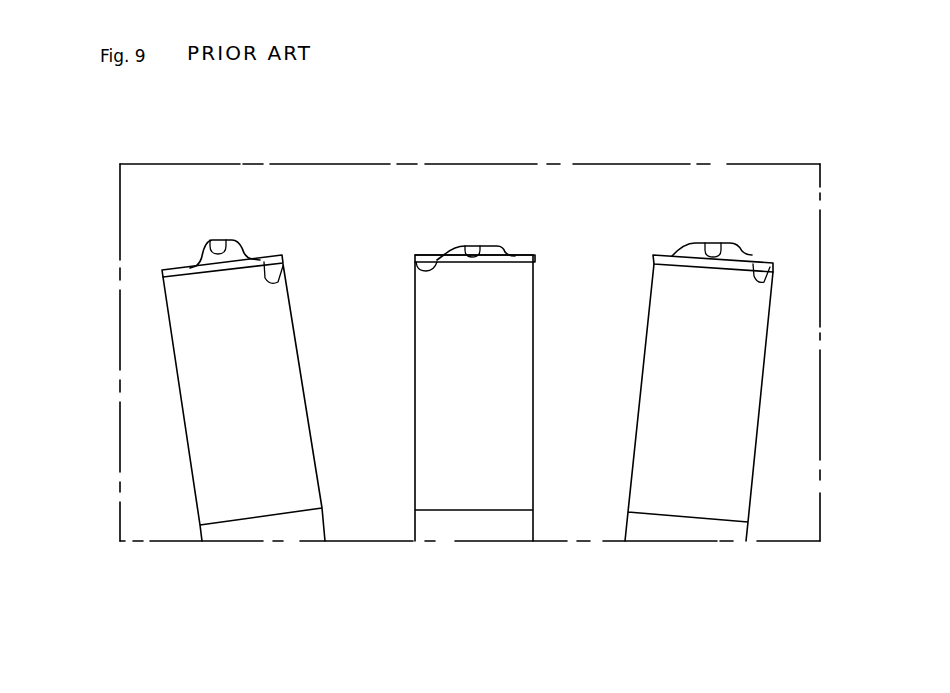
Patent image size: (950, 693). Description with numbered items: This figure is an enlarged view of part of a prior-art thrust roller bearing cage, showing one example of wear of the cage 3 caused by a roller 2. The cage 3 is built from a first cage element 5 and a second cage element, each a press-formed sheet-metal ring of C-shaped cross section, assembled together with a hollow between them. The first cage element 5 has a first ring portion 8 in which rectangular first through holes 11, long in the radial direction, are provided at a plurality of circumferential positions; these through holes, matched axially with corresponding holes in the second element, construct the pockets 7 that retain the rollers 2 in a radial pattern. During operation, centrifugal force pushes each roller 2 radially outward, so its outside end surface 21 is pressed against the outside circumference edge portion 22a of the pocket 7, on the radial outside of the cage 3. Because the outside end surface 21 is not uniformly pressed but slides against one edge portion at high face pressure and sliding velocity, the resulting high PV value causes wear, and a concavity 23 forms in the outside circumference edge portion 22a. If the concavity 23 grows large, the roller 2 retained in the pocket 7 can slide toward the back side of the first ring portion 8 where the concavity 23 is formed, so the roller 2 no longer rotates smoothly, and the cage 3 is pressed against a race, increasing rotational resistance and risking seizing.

The roller 2 is at (225, 375).
The cage 3 is at (655, 160).
The first cage element 5 is at (597, 200).
The pocket 7 is at (307, 431).
The first ring portion 8 is at (787, 352).
The first through hole 11 is at (191, 460).
The outside end surface 21 is at (190, 268).
The outside circumference edge portion 22a is at (414, 266).
The concavity 23 is at (210, 250).